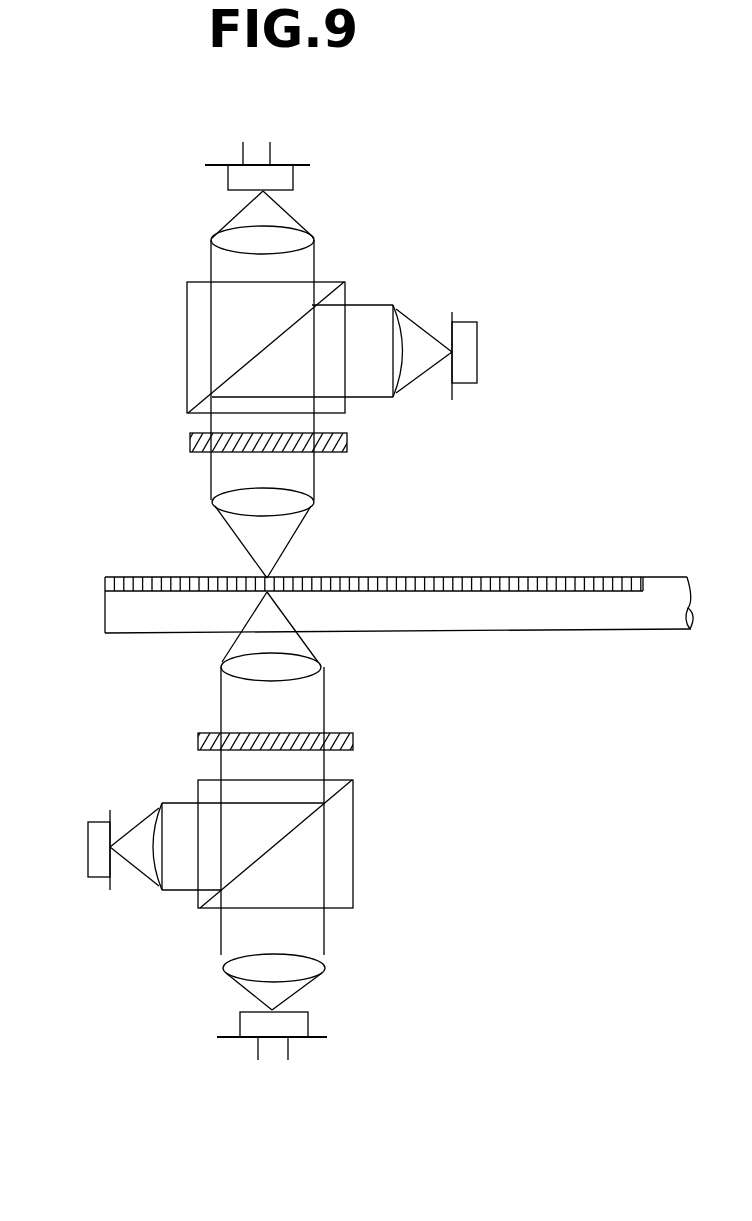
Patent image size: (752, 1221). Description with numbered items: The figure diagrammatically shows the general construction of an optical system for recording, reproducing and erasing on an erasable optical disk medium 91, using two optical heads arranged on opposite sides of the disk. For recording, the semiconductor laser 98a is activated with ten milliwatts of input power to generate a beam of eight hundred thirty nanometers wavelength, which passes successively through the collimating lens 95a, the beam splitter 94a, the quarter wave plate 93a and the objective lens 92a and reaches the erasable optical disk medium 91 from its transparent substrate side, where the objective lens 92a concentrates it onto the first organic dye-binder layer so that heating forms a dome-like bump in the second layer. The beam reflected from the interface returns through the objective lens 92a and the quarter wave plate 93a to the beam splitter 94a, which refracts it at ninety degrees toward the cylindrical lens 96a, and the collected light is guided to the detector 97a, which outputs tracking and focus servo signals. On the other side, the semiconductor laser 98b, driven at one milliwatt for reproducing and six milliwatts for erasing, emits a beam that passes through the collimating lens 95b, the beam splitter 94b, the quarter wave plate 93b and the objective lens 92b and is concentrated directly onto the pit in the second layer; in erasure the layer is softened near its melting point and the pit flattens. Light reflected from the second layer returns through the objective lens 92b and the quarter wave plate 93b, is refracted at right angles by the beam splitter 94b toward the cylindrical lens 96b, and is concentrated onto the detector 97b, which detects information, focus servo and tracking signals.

The erasable optical disk medium 91 is at (553, 580).
The objective lens 92a is at (306, 666).
The objective lens 92b is at (303, 504).
The quarter wave plate 93a is at (343, 741).
The quarter wave plate 93b is at (343, 443).
The beam splitter 94a is at (338, 834).
The beam splitter 94b is at (343, 292).
The collimating lens 95a is at (310, 968).
The collimating lens 95b is at (299, 238).
The cylindrical lens 96a is at (157, 810).
The cylindrical lens 96b is at (405, 318).
The detector 97a is at (97, 833).
The detector 97b is at (467, 342).
The semiconductor laser 98a is at (295, 1023).
The semiconductor laser 98b is at (286, 178).